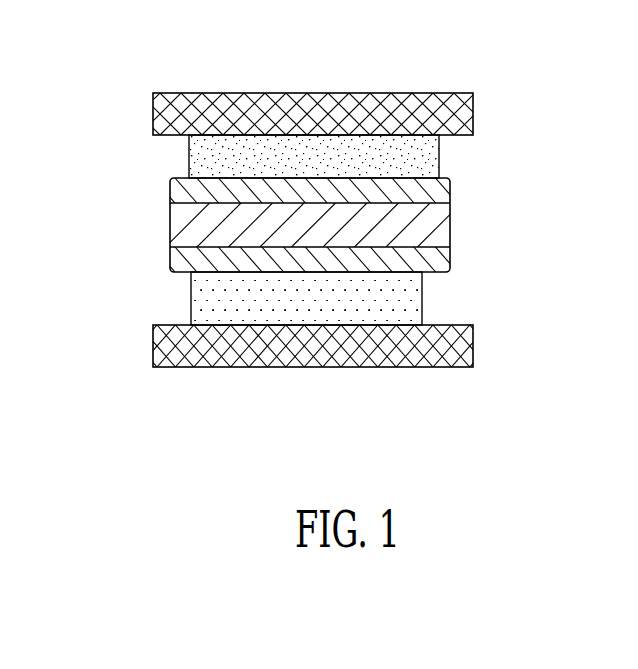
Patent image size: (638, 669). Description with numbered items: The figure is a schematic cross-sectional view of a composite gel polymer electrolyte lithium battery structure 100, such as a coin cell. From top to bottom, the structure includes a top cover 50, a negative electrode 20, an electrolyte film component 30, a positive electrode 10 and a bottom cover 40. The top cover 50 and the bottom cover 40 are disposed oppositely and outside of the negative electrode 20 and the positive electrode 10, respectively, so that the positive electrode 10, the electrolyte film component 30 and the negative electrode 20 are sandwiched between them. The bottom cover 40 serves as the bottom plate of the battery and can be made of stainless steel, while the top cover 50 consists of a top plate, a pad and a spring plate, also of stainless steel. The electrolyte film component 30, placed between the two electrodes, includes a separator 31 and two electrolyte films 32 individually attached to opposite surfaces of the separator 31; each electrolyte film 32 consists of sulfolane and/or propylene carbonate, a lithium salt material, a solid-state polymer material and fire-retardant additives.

The composite gel polymer electrolyte lithium battery structure 100 is at (132, 47).
The top cover 50 is at (465, 115).
The negative electrode 20 is at (425, 157).
The electrolyte film component 30 is at (366, 227).
The electrolyte film 32 is at (440, 193).
The separator 31 is at (443, 225).
The positive electrode 10 is at (410, 302).
The bottom cover 40 is at (465, 347).